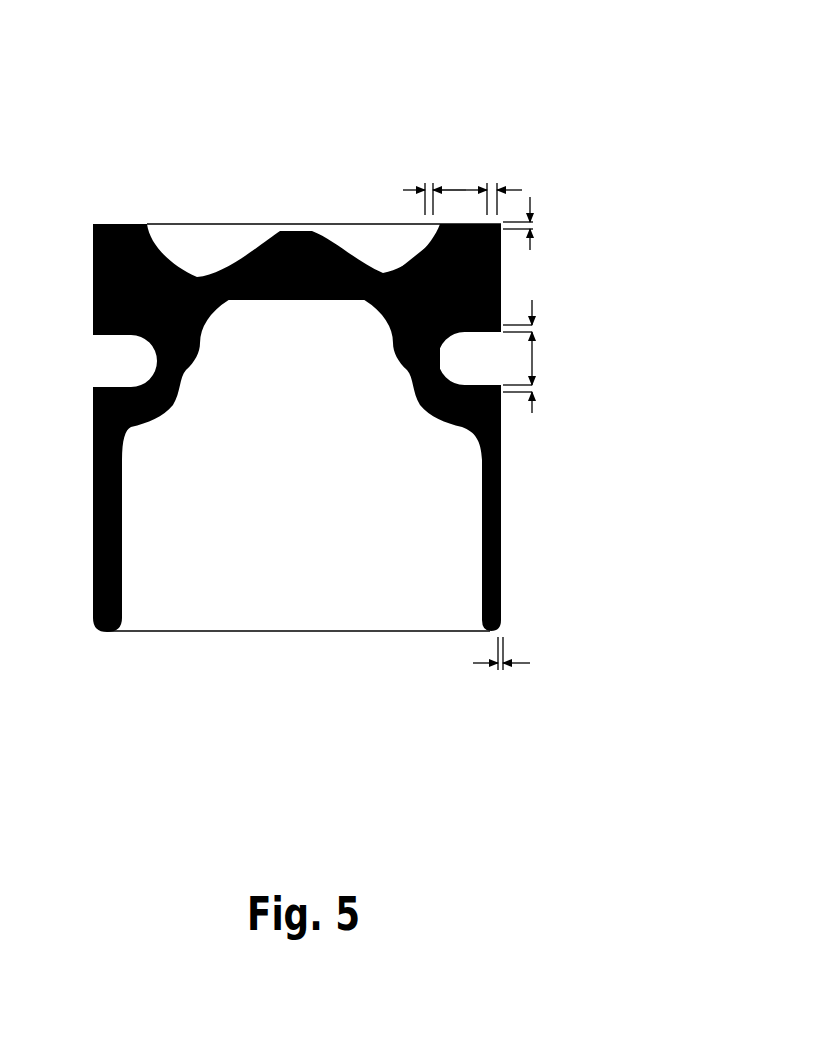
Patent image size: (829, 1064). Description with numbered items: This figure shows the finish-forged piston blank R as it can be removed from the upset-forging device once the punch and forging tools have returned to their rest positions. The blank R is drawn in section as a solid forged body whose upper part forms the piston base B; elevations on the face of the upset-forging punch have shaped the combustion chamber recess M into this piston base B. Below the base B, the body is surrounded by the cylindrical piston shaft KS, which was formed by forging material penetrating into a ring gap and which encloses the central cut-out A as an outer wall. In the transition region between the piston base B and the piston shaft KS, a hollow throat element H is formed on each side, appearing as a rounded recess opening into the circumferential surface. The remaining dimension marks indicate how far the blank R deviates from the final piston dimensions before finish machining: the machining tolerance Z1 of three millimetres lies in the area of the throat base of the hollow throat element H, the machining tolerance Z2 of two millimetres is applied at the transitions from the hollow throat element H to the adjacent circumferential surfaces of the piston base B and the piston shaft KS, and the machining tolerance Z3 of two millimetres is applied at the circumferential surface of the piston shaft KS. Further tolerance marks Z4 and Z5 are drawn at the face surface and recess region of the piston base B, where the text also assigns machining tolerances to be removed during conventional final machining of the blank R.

The finish-forged piston blank R is at (232, 131).
The piston base B is at (93, 278).
The combustion chamber recess M is at (390, 243).
The hollow throat element H is at (458, 348).
The piston shaft KS is at (503, 528).
The cut-out A is at (306, 503).
The machining tolerance Z1 is at (434, 187).
The machining tolerance Z2 is at (535, 356).
The machining tolerance Z3 is at (501, 670).
The dimension Z4 is at (535, 223).
The dimension Z5 is at (494, 187).